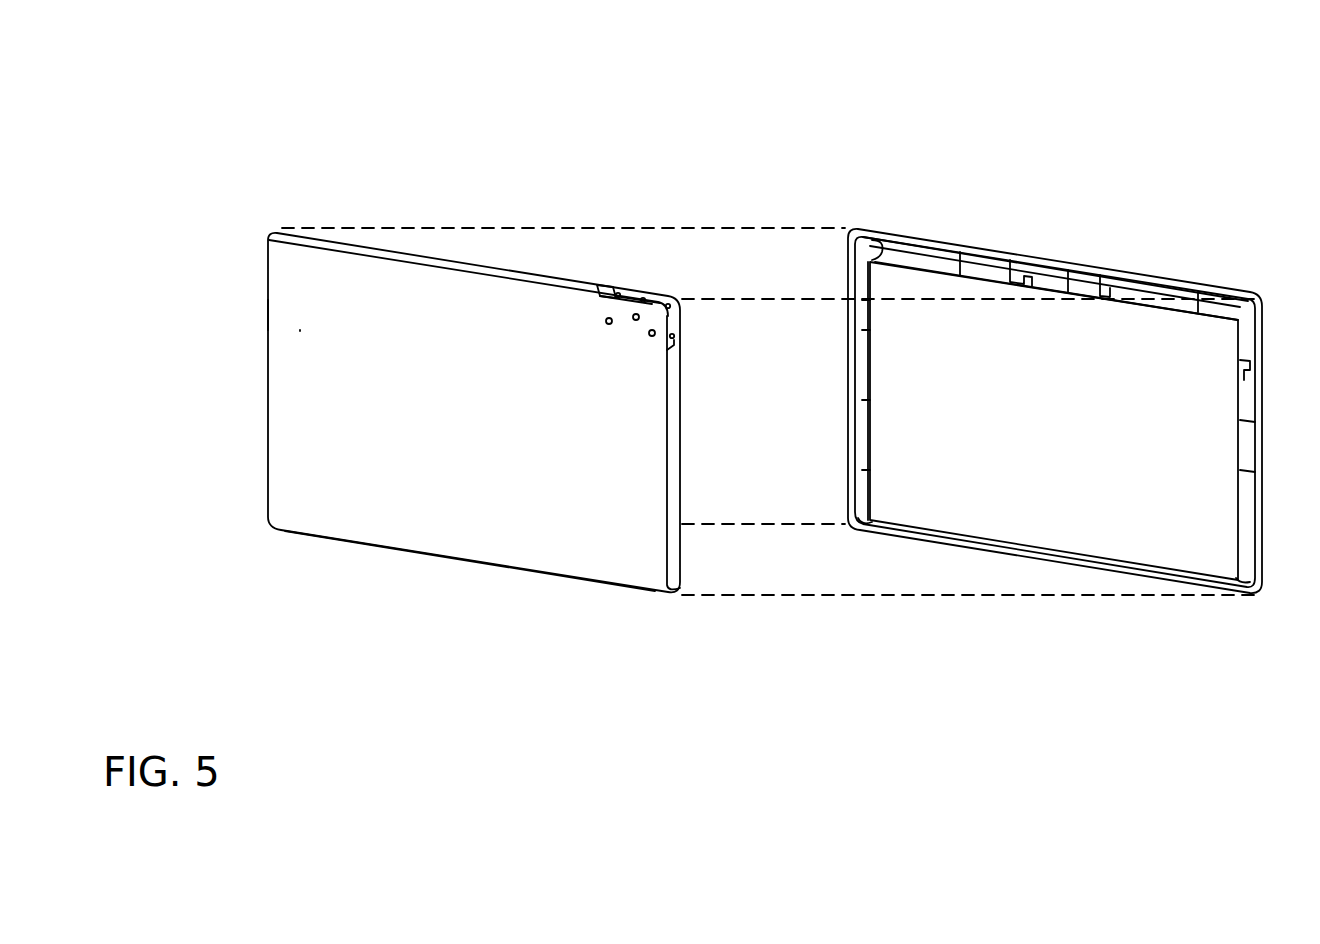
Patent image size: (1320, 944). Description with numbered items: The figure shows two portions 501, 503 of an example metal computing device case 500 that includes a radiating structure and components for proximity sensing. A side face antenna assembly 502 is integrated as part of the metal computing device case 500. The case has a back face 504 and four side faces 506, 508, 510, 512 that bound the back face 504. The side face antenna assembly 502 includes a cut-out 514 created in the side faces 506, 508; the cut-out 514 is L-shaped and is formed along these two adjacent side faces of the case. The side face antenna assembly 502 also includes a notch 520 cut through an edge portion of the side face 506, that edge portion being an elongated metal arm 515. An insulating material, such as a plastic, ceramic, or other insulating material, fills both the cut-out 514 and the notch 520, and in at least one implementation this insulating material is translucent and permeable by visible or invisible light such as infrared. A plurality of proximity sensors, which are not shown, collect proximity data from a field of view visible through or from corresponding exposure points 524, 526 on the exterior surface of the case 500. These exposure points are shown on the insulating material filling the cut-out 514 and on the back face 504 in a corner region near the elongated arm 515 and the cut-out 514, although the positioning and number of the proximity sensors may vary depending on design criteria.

The computing device case 500 is at (1090, 127).
The first portion of the computing device case 501 is at (272, 229).
The side face antenna assembly 502 is at (703, 281).
The second portion of the computing device case 503 is at (1183, 282).
The back face 504 is at (295, 485).
The side face 506 is at (410, 255).
The side face 508 is at (674, 546).
The side face 510 is at (266, 312).
The side face 512 is at (424, 558).
The cut-out 514 is at (630, 295).
The elongated metal arm 515 is at (645, 293).
The notch 520 is at (612, 284).
The exposure point 524 is at (652, 337).
The exposure point 526 is at (674, 336).